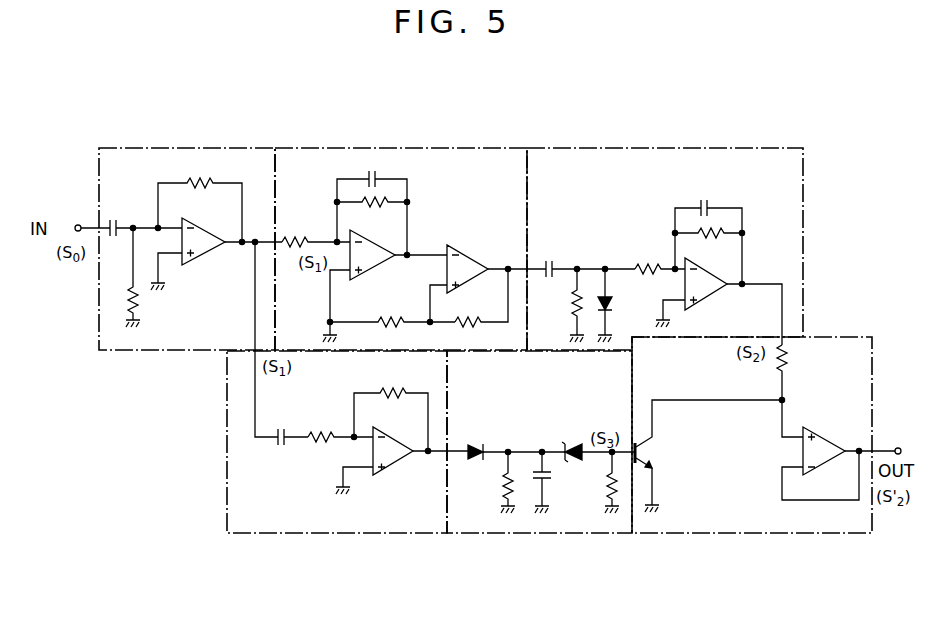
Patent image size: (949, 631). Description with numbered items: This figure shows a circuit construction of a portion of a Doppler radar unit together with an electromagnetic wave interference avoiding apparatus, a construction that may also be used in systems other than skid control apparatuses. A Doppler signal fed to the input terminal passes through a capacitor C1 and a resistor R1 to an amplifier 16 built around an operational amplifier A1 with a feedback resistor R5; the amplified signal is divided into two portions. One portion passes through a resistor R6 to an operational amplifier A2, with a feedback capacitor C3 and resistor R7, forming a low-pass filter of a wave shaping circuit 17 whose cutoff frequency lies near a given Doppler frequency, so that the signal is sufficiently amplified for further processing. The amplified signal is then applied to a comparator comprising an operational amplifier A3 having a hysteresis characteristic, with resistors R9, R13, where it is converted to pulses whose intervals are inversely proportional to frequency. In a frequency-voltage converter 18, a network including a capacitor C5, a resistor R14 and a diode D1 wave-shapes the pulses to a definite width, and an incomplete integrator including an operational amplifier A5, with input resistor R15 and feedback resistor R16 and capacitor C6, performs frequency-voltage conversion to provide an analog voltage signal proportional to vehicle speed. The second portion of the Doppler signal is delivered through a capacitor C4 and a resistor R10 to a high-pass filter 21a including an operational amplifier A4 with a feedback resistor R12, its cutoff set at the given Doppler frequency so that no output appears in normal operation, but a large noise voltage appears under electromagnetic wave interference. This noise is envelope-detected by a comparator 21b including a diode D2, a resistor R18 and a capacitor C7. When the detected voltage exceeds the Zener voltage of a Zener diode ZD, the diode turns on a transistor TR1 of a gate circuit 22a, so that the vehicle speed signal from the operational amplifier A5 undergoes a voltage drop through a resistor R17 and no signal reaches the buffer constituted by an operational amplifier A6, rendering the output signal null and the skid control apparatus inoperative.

The amplifier 16 is at (195, 147).
The wave shaping circuit 17 is at (398, 147).
The frequency-voltage converter 18 is at (663, 147).
The high-pass filter 21a is at (337, 533).
The comparator 21b is at (542, 533).
The gate circuit 22a is at (763, 535).
The capacitor C1 is at (113, 217).
The resistor R1 is at (120, 277).
The resistor R5 is at (200, 199).
The operational amplifier A1 is at (216, 254).
The resistor R6 is at (316, 228).
The capacitor C3 is at (372, 206).
The resistor R7 is at (371, 213).
The operational amplifier A2 is at (385, 286).
The resistor R9 is at (391, 306).
The resistor R13 is at (480, 298).
The operational amplifier A3 is at (496, 264).
The capacitor C5 is at (586, 260).
The resistor R14 is at (578, 391).
The diode D1 is at (618, 305).
The resistor R15 is at (656, 258).
The resistor R16 is at (708, 245).
The capacitor C6 is at (708, 231).
The operational amplifier A5 is at (719, 301).
The resistor R17 is at (801, 372).
The transistor TR1 is at (708, 456).
The operational amplifier A6 is at (838, 463).
The capacitor C4 is at (289, 427).
The resistor R10 is at (339, 425).
The resistor R12 is at (391, 408).
The operational amplifier A4 is at (402, 453).
The diode D2 is at (515, 441).
The resistor R18 is at (490, 482).
The capacitor C7 is at (551, 482).
The Zener diode ZD is at (596, 442).